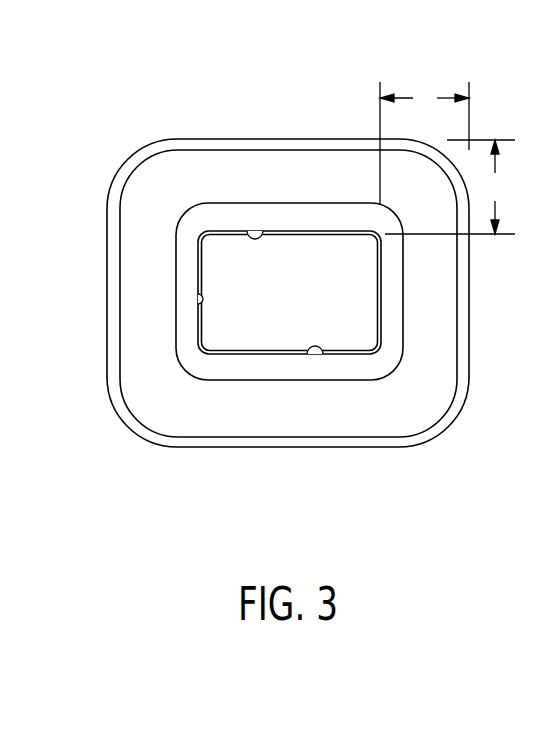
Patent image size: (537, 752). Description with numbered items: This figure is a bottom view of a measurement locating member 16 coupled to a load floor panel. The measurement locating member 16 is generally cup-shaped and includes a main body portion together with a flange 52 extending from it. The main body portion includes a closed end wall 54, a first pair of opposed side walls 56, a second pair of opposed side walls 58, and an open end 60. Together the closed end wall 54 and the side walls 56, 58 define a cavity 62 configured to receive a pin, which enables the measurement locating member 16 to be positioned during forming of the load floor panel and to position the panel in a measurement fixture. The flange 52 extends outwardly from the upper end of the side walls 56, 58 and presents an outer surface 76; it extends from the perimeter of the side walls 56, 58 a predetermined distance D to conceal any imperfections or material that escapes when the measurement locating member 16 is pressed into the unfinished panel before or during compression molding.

The measurement locating member 16 is at (104, 112).
The flange 52 is at (138, 286).
The closed end wall 54 is at (276, 294).
The first pair of opposed side walls 56 is at (251, 238).
The second pair of opposed side walls 58 is at (198, 303).
The open end 60 is at (397, 293).
The cavity 62 is at (336, 255).
The outer surface 76 is at (211, 418).